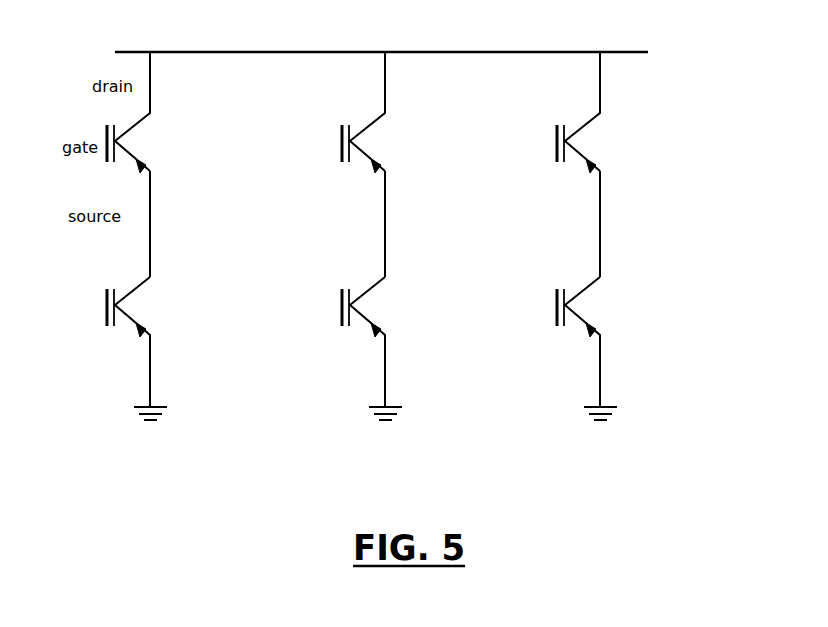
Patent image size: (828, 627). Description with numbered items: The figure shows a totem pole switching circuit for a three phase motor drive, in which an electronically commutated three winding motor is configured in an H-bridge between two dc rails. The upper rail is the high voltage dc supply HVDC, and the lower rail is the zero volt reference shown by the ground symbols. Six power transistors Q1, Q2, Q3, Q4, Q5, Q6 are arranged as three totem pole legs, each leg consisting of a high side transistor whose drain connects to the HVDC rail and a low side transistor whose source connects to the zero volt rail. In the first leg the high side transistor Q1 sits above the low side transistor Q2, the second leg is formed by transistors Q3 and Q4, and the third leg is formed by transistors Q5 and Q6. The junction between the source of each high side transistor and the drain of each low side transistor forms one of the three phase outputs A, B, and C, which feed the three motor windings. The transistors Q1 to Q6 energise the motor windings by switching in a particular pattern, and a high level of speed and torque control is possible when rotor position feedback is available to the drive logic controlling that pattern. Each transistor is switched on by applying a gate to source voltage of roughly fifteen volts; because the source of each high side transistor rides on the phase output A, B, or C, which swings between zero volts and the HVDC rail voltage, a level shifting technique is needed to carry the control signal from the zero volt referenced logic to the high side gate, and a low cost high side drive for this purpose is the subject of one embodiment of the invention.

The high voltage DC bus HVDC is at (381, 36).
The power transistor Q1 is at (139, 112).
The power transistor Q2 is at (139, 342).
The power transistor Q3 is at (374, 112).
The power transistor Q4 is at (375, 342).
The power transistor Q5 is at (591, 112).
The power transistor Q6 is at (591, 342).
The phase output A is at (160, 224).
The phase output B is at (395, 224).
The phase output C is at (613, 224).